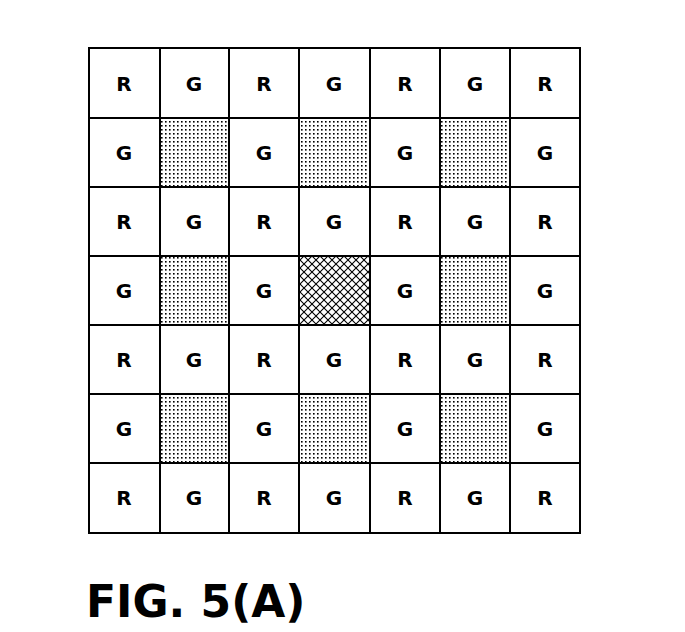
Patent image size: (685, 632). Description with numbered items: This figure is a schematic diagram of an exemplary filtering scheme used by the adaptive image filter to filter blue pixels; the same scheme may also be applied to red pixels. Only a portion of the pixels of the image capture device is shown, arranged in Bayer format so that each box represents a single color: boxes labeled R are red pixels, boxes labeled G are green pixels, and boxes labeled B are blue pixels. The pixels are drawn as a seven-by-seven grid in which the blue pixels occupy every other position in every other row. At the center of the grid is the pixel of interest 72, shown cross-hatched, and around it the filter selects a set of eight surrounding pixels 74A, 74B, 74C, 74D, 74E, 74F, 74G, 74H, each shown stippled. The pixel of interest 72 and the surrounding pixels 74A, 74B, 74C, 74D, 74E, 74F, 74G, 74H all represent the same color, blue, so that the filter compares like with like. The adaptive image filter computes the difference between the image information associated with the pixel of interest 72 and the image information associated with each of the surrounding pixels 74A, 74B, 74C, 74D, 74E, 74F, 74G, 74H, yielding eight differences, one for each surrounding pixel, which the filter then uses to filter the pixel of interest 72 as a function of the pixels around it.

The pixel of interest 72 is at (365, 268).
The surrounding pixel 74A is at (309, 123).
The surrounding pixel 74B is at (167, 137).
The surrounding pixel 74C is at (166, 275).
The surrounding pixel 74D is at (166, 411).
The surrounding pixel 74E is at (353, 455).
The surrounding pixel 74F is at (500, 411).
The surrounding pixel 74G is at (497, 276).
The surrounding pixel 74H is at (500, 131).